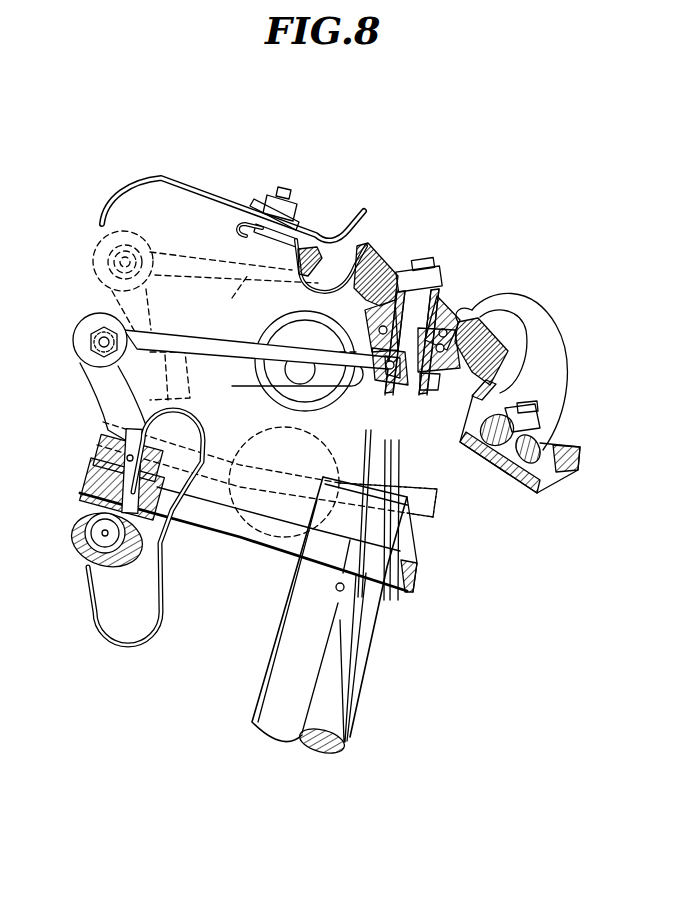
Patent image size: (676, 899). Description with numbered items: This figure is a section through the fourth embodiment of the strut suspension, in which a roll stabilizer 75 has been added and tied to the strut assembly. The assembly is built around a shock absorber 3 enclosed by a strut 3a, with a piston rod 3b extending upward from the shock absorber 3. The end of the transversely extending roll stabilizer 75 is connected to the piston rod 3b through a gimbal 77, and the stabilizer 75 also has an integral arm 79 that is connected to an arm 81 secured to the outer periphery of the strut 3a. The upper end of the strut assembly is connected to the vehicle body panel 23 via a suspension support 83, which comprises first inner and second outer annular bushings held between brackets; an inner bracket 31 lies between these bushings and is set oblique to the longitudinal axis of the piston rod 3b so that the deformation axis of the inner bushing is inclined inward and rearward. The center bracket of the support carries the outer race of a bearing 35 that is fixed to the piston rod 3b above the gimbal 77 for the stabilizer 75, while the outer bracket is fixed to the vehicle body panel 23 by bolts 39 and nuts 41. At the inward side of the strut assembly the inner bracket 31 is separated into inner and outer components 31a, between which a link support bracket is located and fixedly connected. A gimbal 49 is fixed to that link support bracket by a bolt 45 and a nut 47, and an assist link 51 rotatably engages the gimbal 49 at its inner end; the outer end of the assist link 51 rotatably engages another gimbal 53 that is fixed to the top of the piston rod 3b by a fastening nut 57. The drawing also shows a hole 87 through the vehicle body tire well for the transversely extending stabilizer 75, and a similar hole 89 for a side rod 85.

The shock absorber 3 is at (400, 641).
The strut 3a is at (343, 692).
The piston rod 3b is at (410, 447).
The vehicle body panel 23 is at (203, 193).
The inner bracket 31 is at (480, 343).
The inner and outer components of the inner bracket 31a is at (398, 280).
The bearing 35 is at (500, 320).
The bolts 39 is at (260, 237).
The nuts 41 is at (285, 210).
The bolt 45 is at (500, 480).
The nut 47 is at (547, 427).
The gimbal 49 is at (533, 447).
The assist link 51 is at (543, 343).
The gimbal 53 is at (453, 297).
The fastening nut 57 is at (430, 277).
The roll stabilizer 75 is at (358, 374).
The gimbal 77 is at (423, 397).
The integral arm 79 is at (223, 340).
The arm 81 is at (240, 533).
The suspension support 83 is at (386, 252).
The side rod 85 is at (200, 507).
The hole 87 is at (267, 373).
The hole 89 is at (150, 620).